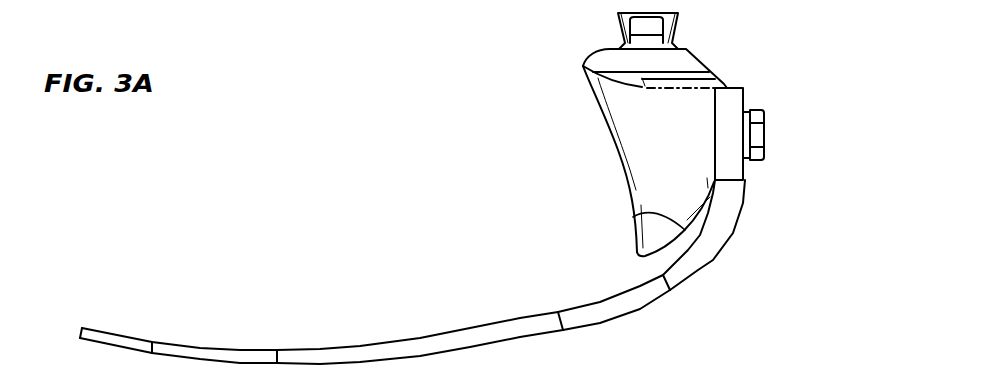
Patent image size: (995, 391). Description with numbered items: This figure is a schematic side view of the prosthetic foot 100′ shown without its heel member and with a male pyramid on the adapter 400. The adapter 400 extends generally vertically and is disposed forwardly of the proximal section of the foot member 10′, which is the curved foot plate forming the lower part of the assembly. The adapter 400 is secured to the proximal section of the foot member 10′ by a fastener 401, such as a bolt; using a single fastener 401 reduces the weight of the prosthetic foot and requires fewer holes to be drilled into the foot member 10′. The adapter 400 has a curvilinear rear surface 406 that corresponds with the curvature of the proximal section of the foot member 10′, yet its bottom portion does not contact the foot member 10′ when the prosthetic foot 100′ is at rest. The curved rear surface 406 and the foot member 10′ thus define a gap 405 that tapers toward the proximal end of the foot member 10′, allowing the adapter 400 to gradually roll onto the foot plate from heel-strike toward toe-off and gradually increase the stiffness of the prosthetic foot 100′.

The prosthetic foot 100′ is at (199, 267).
The foot member 10′ is at (312, 349).
The adapter 400 is at (534, 102).
The fastener 401 is at (753, 112).
The gap 405 is at (667, 255).
The curvilinear rear surface 406 is at (632, 216).